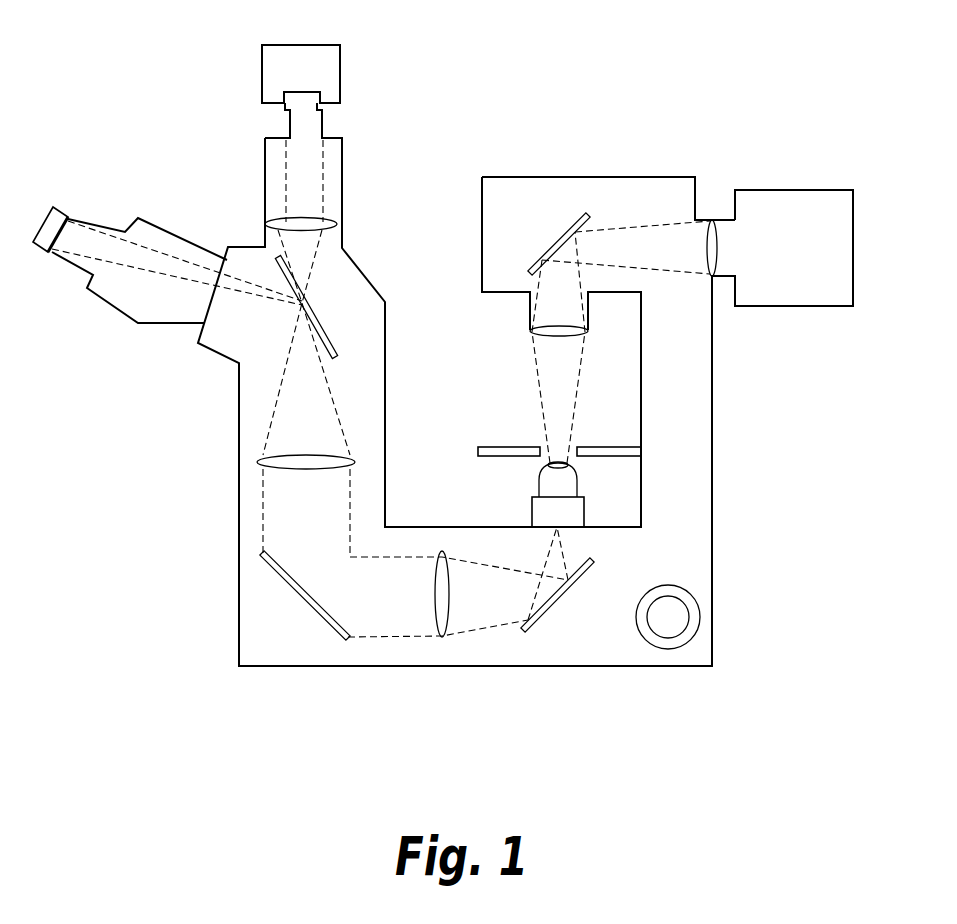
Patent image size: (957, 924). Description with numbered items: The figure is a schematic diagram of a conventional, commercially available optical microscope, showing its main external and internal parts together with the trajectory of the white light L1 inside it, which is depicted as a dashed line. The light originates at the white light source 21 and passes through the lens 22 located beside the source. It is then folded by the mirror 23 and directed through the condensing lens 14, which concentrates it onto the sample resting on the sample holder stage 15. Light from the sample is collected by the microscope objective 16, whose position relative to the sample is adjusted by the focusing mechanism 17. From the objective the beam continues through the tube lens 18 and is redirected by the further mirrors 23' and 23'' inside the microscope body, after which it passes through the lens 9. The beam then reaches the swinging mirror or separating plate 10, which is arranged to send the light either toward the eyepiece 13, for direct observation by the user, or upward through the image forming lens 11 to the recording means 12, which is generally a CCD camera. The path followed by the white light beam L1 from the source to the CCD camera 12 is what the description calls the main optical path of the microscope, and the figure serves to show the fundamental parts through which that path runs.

The lens 9 is at (319, 462).
The swinging mirror or separating plate 10 is at (321, 307).
The image forming lens 11 is at (324, 222).
The recording means 12 is at (326, 74).
The eyepiece 13 is at (130, 245).
The condensing lens 14 is at (537, 334).
The sample holder stage 15 is at (534, 447).
The microscope objective 16 is at (531, 494).
The focusing mechanism 17 is at (668, 595).
The tube lens 18 is at (460, 580).
The white light source 21 is at (794, 248).
The lens 22 is at (609, 187).
The mirror 23 is at (554, 244).
The mirror 23' is at (563, 596).
The mirror 23'' is at (300, 595).
The light L1 is at (678, 248).